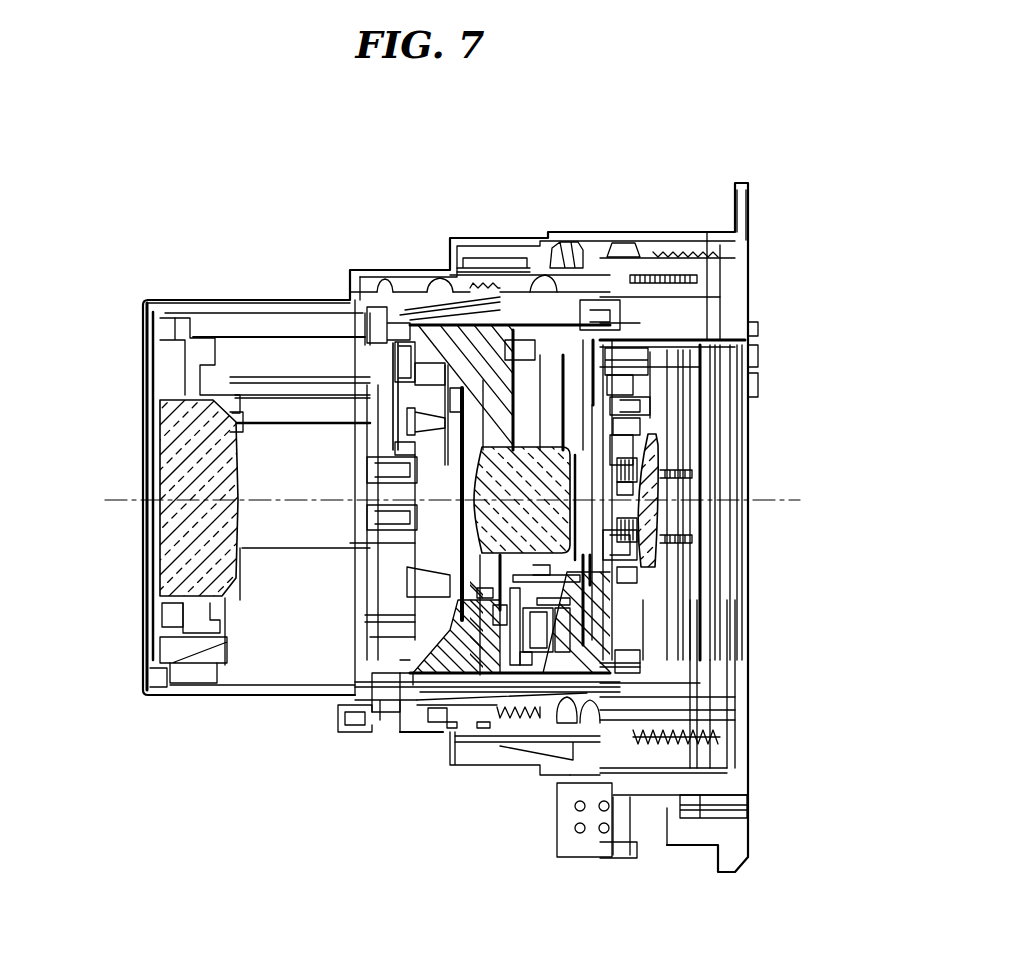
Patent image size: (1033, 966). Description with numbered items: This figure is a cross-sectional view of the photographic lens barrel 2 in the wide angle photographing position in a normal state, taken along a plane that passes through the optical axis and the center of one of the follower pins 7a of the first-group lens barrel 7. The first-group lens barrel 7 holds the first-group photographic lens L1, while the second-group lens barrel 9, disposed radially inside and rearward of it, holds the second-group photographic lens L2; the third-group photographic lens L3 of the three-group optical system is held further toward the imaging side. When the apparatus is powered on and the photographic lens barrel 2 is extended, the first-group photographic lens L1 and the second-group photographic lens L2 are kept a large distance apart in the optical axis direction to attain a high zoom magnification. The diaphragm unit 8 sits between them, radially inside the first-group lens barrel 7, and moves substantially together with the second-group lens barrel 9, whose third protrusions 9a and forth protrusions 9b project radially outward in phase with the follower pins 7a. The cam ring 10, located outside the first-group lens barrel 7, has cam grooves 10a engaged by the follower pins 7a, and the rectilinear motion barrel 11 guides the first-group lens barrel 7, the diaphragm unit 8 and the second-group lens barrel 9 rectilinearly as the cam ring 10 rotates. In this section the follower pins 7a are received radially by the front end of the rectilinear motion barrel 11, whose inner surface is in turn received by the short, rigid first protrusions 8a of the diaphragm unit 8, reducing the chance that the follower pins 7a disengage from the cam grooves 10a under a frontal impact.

The photographic lens barrel 2 is at (133, 253).
The first-group lens barrel 7 is at (225, 692).
The follower pins 7a is at (400, 728).
The diaphragm unit 8 is at (460, 660).
The first protrusions 8a is at (388, 330).
The second-group lens barrel 9 is at (587, 655).
The third protrusions 9a is at (593, 330).
The forth protrusions 9b is at (518, 335).
The cam ring 10 is at (475, 717).
The cam grooves 10a is at (372, 717).
The rectilinear motion barrel 11 is at (407, 682).
The first-group photographic lens L1 is at (192, 463).
The second-group photographic lens L2 is at (505, 483).
The third-group photographic lens L3 is at (648, 510).